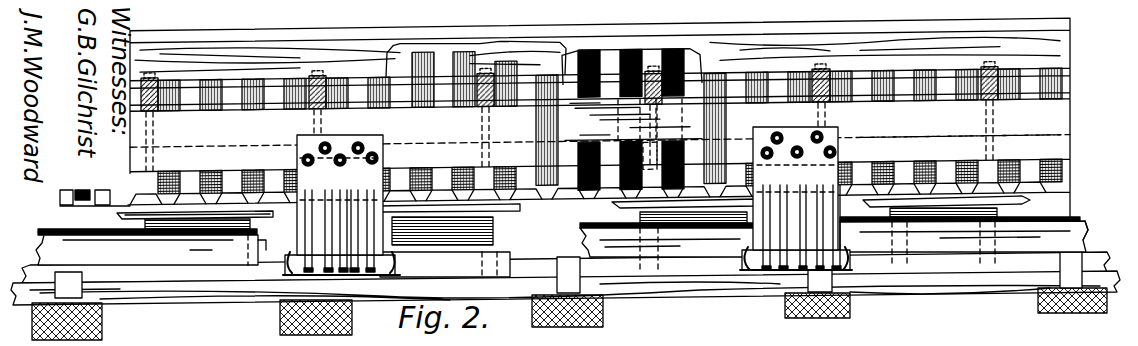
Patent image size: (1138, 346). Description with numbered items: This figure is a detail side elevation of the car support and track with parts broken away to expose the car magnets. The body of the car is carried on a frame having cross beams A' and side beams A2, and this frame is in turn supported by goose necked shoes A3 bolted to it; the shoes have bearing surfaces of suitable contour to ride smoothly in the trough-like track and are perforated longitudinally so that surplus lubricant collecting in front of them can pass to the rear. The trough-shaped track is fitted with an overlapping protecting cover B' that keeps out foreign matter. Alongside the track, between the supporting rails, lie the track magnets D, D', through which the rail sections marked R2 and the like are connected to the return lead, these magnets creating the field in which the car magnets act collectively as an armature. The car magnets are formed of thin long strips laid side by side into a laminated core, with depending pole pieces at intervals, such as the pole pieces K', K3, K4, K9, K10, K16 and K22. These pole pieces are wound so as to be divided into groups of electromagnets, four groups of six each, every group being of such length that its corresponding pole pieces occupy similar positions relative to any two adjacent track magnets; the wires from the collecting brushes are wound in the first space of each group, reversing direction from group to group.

The cross beams A' is at (569, 71).
The side beams A2 is at (960, 123).
The goose necked shoes A3 is at (300, 268).
The protecting cover B' is at (668, 228).
The track magnet D is at (398, 235).
The track magnet D' is at (731, 234).
The pole piece K' is at (68, 208).
The roller block R2 is at (95, 208).
The pole piece K3 is at (143, 197).
The pole piece K4 is at (187, 197).
The pole piece K9 is at (395, 198).
The pole piece K10 is at (440, 198).
The pole piece K16 is at (694, 199).
The pole piece K22 is at (946, 181).